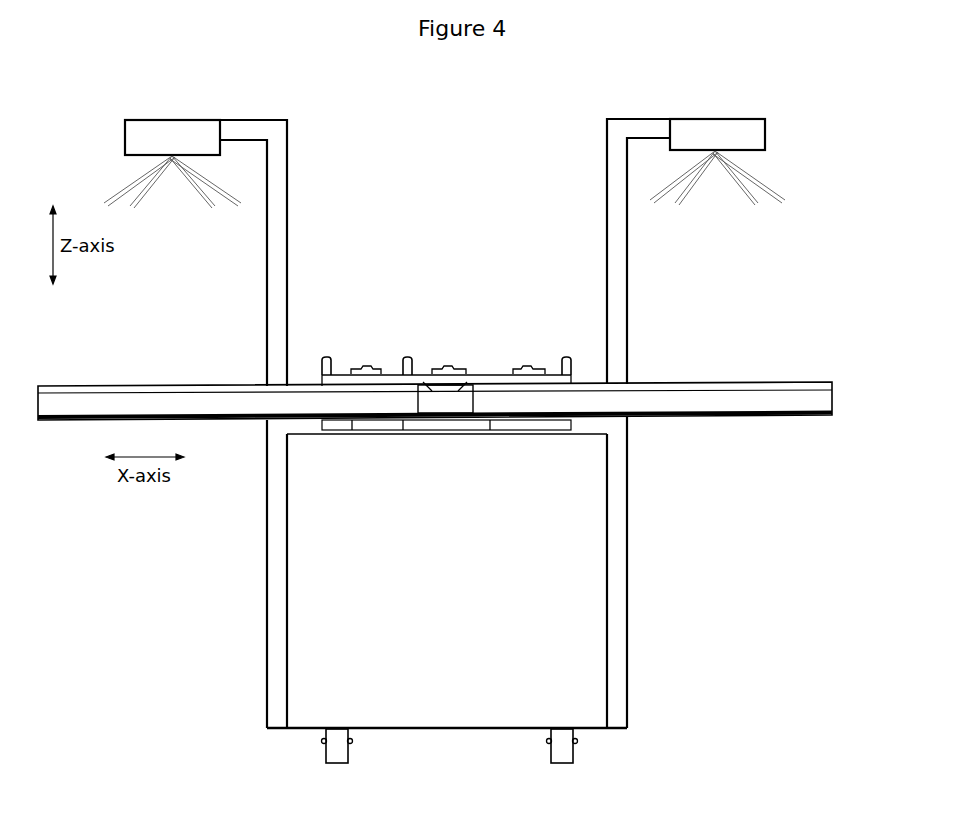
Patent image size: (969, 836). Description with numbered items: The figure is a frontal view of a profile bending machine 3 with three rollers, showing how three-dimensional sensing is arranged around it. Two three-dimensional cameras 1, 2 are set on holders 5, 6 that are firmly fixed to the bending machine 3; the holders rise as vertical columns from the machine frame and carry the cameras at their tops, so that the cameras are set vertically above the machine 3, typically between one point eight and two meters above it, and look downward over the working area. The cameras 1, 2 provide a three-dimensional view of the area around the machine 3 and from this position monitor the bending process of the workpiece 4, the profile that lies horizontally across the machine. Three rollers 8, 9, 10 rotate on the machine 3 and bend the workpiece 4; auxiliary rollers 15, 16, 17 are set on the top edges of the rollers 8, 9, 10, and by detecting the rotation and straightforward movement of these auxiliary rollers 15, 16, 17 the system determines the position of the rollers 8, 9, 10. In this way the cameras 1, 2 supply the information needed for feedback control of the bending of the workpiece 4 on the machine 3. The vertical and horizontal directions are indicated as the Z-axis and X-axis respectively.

The 3D camera 1 is at (753, 132).
The 3D camera 2 is at (132, 135).
The bending machine 3 is at (573, 593).
The workpiece 4 is at (215, 402).
The holder 5 is at (615, 182).
The holder 6 is at (270, 190).
The roller 8 is at (548, 377).
The roller 9 is at (344, 370).
The roller 10 is at (422, 372).
The auxiliary roller 15 is at (565, 362).
The auxiliary roller 16 is at (327, 365).
The auxiliary roller 17 is at (407, 365).